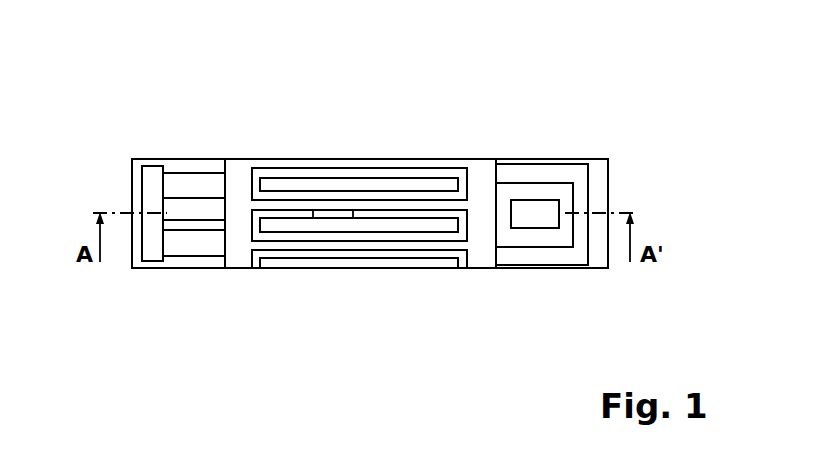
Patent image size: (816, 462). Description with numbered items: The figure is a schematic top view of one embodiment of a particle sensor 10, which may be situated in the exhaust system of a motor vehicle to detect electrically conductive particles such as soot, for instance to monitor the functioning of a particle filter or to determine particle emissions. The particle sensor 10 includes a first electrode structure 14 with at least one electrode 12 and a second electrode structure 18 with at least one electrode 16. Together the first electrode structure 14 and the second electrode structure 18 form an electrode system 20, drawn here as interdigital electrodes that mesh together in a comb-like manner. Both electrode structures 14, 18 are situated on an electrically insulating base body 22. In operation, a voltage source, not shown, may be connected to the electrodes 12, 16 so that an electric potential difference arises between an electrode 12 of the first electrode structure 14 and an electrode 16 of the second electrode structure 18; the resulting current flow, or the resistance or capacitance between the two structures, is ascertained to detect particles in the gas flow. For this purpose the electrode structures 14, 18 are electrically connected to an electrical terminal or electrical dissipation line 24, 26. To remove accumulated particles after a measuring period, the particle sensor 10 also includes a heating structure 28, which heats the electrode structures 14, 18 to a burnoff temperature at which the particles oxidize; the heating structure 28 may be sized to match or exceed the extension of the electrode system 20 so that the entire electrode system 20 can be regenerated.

The particle sensor 10 is at (668, 97).
The electrode 12 is at (395, 158).
The first electrode structure 14 is at (437, 130).
The electrode 16 is at (447, 262).
The second electrode structure 18 is at (398, 282).
The electrode system 20 is at (340, 133).
The electrically insulating base body 22 is at (600, 166).
The electrical dissipation line 24 is at (150, 178).
The electrical dissipation line 26 is at (578, 250).
The heating structure 28 is at (323, 214).